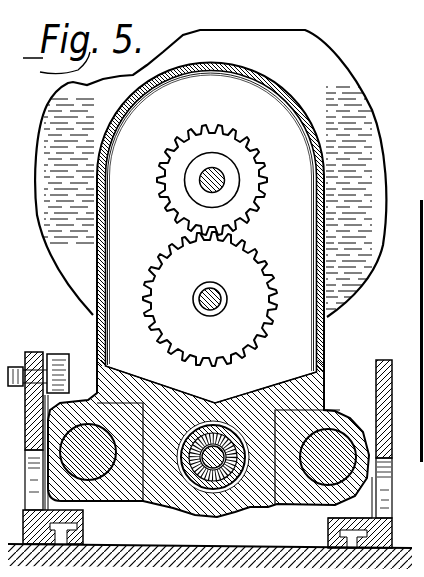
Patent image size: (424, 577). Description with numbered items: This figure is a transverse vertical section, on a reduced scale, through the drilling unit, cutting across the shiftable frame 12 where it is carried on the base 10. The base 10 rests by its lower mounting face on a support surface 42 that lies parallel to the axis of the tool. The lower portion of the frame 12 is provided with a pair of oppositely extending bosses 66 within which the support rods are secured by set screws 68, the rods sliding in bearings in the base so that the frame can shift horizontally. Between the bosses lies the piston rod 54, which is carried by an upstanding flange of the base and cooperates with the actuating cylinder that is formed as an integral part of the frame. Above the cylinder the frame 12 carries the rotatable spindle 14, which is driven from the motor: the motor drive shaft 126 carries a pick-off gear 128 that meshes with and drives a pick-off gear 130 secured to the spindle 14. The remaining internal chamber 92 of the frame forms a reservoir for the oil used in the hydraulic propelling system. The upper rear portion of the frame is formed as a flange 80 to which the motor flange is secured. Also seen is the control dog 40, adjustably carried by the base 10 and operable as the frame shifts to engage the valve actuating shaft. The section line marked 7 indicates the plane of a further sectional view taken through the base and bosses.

The section line 7- 7 is at (14, 463).
The base 10 is at (391, 529).
The shiftable frame 12 is at (323, 233).
The rotatable spindle 14 is at (221, 292).
The control dog 40 is at (53, 354).
The support surface 42 is at (142, 546).
The piston rod 54 is at (220, 408).
The bosses 66 is at (98, 499).
The set screws 68 is at (57, 437).
The flange 80 is at (347, 102).
The internal chamber 92 is at (300, 240).
The drive shaft 126 is at (220, 165).
The pick-off gear 128 is at (245, 175).
The pick-off gear 130 is at (247, 323).